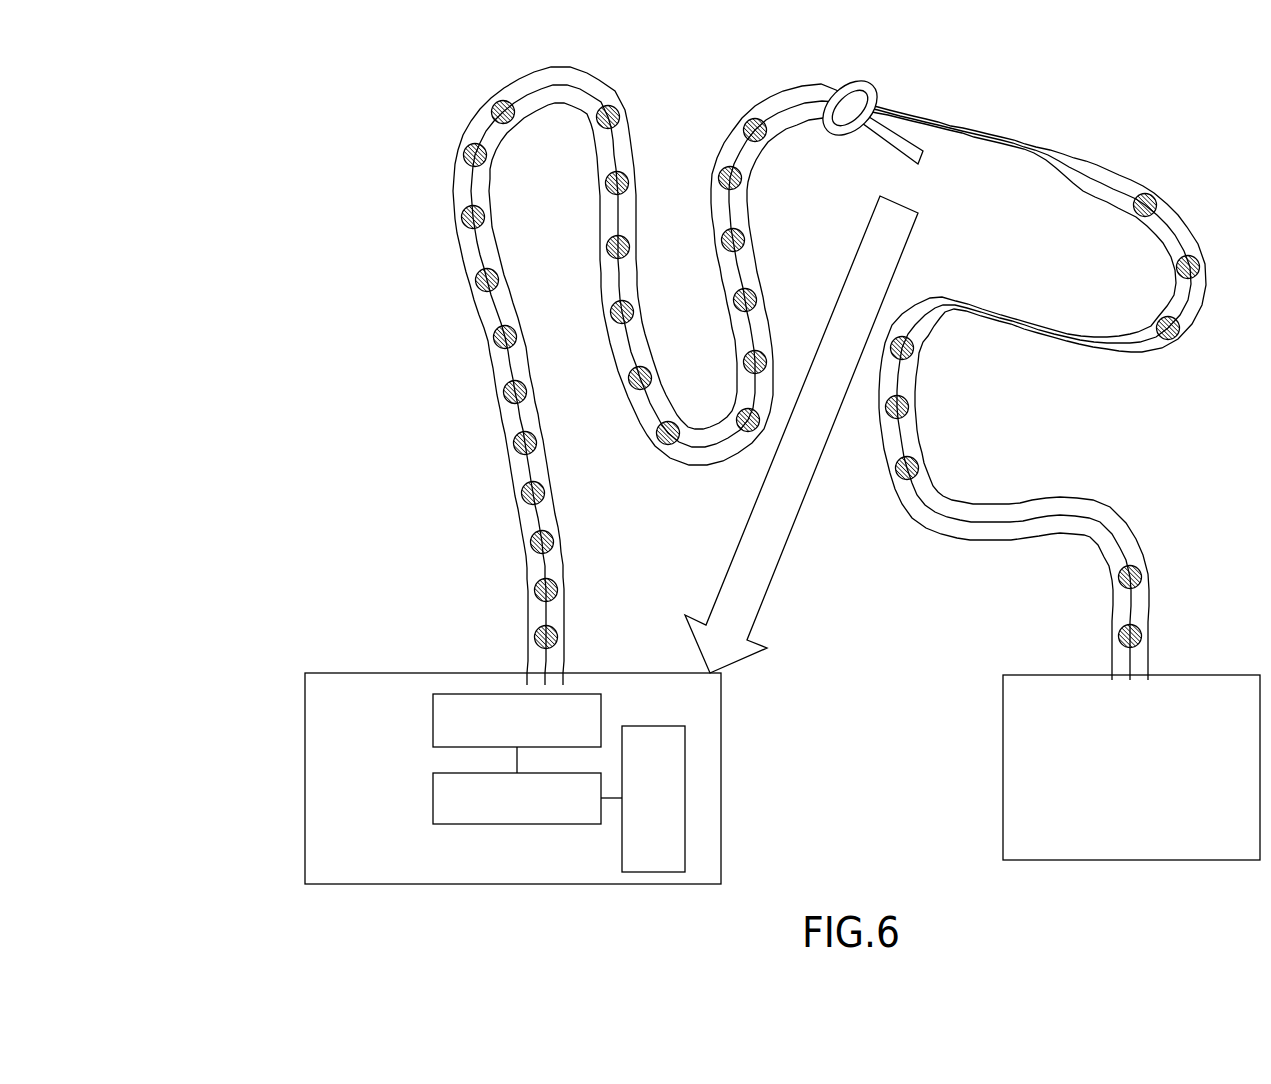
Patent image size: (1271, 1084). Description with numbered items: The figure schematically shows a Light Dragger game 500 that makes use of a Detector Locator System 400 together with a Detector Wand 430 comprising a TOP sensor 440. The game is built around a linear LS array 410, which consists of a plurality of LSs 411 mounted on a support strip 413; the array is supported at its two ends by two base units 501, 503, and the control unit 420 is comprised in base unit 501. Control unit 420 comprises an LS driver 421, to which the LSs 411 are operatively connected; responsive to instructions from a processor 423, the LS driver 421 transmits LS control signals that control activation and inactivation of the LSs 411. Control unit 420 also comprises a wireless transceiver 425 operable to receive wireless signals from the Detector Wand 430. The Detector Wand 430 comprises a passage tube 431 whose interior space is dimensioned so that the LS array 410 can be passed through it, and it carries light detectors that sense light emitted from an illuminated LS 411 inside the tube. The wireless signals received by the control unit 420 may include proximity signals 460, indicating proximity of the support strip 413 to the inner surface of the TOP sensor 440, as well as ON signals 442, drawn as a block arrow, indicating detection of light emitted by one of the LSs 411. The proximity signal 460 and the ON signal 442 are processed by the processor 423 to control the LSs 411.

The Detector Locator System 400 is at (442, 327).
The Light Dragger game 500 is at (755, 376).
The linear LS array 410 is at (937, 353).
The LSs 411 is at (1172, 256).
The support strip 413 is at (1205, 325).
The control unit 420 is at (248, 759).
The base unit 501 is at (416, 778).
The LS driver 421 is at (433, 722).
The processor 423 is at (433, 800).
The wireless transceiver 425 is at (630, 726).
The Detector Wand 430 is at (910, 104).
The passage tube 431 is at (867, 82).
The TOP sensor 440 is at (833, 77).
The proximity signals 460 is at (824, 434).
The ON signal 442 is at (808, 510).
The base unit 503 is at (1155, 774).